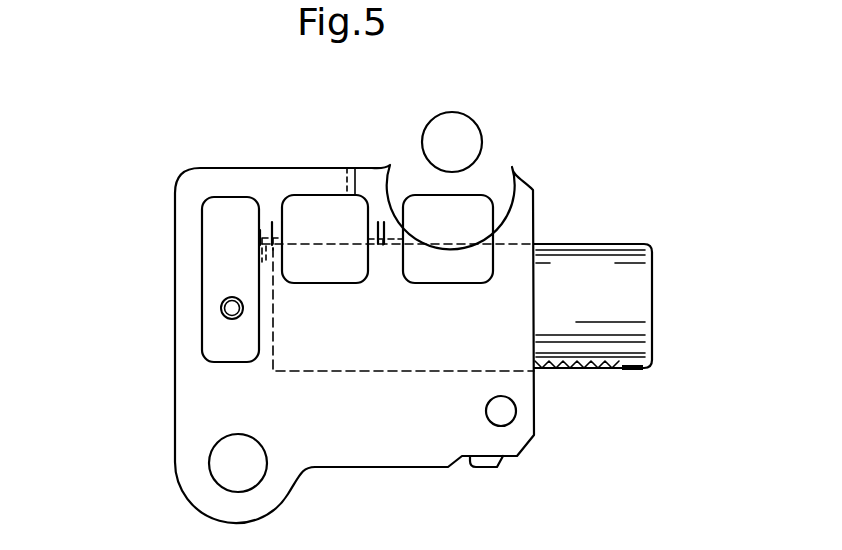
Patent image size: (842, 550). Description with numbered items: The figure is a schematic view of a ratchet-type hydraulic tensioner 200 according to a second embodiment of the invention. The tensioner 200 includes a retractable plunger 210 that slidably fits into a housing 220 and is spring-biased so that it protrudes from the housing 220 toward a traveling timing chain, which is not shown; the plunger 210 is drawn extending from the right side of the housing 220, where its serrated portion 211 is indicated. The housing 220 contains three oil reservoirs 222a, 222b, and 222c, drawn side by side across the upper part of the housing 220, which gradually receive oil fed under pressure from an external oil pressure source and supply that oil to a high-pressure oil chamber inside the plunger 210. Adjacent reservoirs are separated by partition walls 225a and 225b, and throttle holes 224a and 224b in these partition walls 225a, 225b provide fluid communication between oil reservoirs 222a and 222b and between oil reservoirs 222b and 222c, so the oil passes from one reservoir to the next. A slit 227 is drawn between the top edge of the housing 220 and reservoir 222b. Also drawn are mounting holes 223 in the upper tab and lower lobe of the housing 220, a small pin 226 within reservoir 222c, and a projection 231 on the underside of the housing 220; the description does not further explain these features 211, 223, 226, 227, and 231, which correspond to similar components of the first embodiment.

The tensioner 200 is at (166, 220).
The retractable plunger 210 is at (630, 244).
The connector serrations 211 is at (582, 364).
The housing 220 is at (196, 399).
The oil reservoir 222a is at (493, 218).
The oil reservoir 222b is at (306, 195).
The oil reservoir 222c is at (210, 197).
The mounting hole 223 is at (472, 133).
The throttle hole 224a is at (383, 246).
The throttle hole 224b is at (266, 262).
The partition wall 225a is at (380, 228).
The partition wall 225b is at (270, 226).
The positioning pin 226 is at (222, 306).
The slit 227 is at (362, 168).
The projection 231 is at (493, 467).